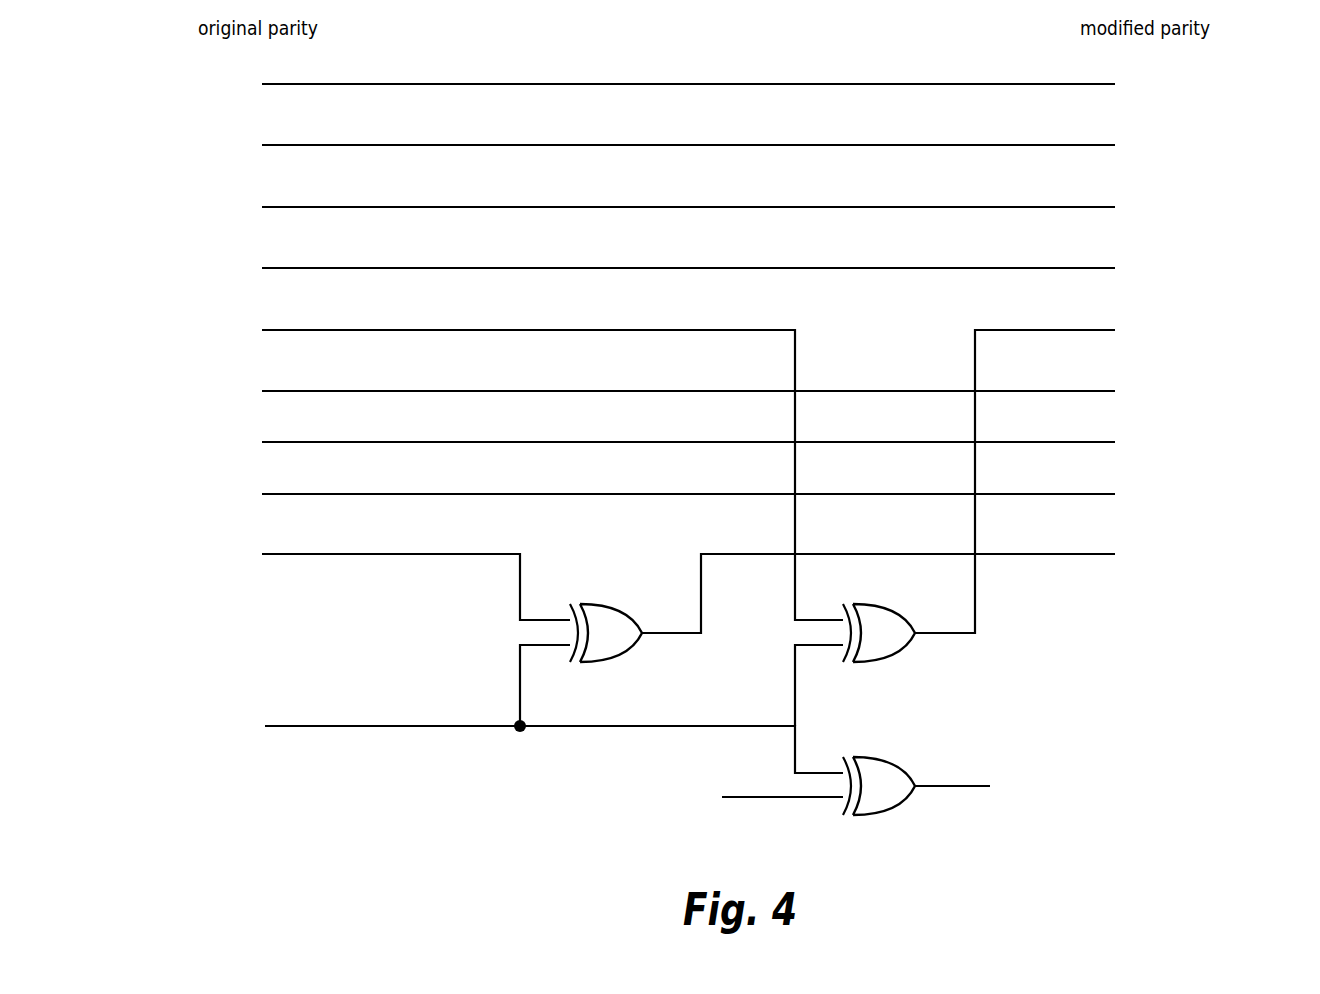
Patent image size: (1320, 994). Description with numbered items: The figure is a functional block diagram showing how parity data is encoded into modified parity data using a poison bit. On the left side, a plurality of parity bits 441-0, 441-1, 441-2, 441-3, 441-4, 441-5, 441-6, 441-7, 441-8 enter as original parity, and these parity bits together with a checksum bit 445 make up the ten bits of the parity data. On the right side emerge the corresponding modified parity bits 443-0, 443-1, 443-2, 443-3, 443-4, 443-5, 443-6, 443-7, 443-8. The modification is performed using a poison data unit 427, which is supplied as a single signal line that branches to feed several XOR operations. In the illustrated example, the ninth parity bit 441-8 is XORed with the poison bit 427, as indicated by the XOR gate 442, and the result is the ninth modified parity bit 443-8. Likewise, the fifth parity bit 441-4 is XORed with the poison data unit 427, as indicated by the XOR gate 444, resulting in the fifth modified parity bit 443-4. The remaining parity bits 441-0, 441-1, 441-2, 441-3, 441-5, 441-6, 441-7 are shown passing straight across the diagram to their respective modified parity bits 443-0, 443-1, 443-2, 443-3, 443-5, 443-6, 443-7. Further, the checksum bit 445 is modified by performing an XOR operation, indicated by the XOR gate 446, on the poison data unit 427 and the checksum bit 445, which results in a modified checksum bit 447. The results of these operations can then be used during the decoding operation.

The parity bit p0 441-0 is at (218, 85).
The parity bit p1 441-1 is at (218, 146).
The parity bit p2 441-2 is at (218, 208).
The parity bit p3 441-3 is at (218, 269).
The fifth parity bit p4 441-4 is at (218, 331).
The parity bit p5 441-5 is at (218, 392).
The parity bit p6 441-6 is at (218, 443).
The parity bit p7 441-7 is at (218, 495).
The ninth parity bit p8 441-8 is at (218, 555).
The modified parity bit pm,0 443-0 is at (1178, 86).
The modified parity bit pm,1 443-1 is at (1178, 147).
The modified parity bit pm,2 443-2 is at (1178, 209).
The modified parity bit pm,3 443-3 is at (1178, 270).
The fifth modified parity bit pm,4 443-4 is at (1178, 332).
The modified parity bit pm,5 443-5 is at (1178, 393).
The modified parity bit pm,6 443-6 is at (1178, 444).
The modified parity bit pm,7 443-7 is at (1178, 496).
The ninth modified parity bit pm,8 443-8 is at (1178, 556).
The poison bit 427 is at (210, 708).
The XOR gate 442 is at (615, 652).
The XOR gate 444 is at (888, 652).
The checksum bit 445 is at (675, 797).
The XOR gate 446 is at (888, 805).
The modified checksum bit 447 is at (1047, 790).